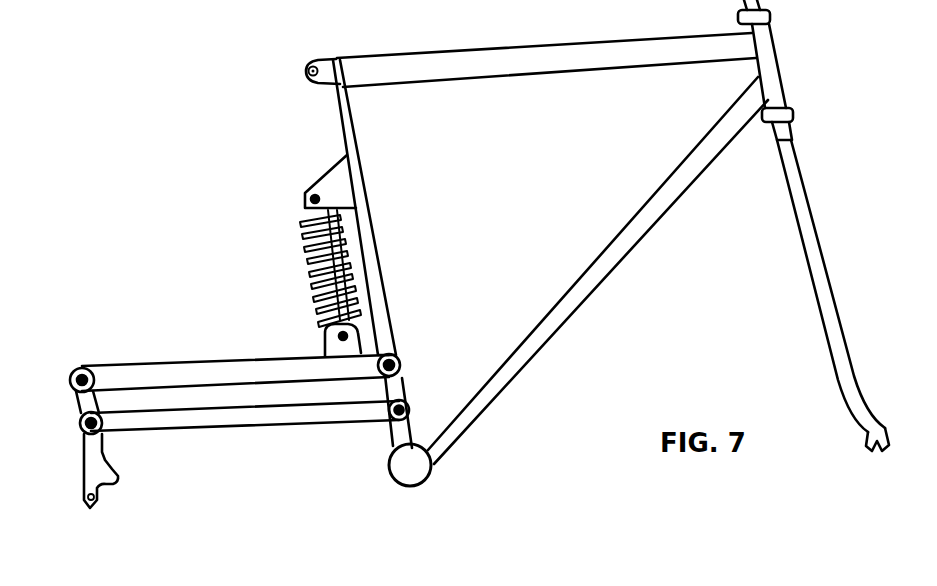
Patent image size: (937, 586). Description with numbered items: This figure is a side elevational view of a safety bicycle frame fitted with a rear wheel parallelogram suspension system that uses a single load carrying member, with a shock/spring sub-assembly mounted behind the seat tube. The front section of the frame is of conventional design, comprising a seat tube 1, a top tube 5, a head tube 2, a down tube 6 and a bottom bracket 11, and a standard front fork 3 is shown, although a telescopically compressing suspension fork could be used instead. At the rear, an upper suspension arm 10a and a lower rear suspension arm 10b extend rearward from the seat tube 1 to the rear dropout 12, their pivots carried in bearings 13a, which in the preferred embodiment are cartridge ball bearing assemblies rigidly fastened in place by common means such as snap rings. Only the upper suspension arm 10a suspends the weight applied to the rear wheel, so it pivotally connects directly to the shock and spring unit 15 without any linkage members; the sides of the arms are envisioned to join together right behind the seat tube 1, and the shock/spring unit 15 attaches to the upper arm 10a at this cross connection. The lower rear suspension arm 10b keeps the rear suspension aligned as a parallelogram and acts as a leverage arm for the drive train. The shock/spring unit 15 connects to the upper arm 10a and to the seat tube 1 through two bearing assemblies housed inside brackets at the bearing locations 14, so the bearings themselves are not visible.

The seat tube 1 is at (340, 121).
The head tube 2 is at (767, 53).
The front fork 3 is at (808, 233).
The top tube 5 is at (535, 60).
The down tube 6 is at (560, 320).
The upper suspension arm 10a is at (183, 372).
The lower rear suspension arm 10b is at (228, 418).
The bottom bracket 11 is at (410, 488).
The rear dropout 12 is at (88, 458).
The bearings 13a is at (399, 369).
The bearing locations 14 is at (304, 193).
The shock and spring unit 15 is at (306, 268).